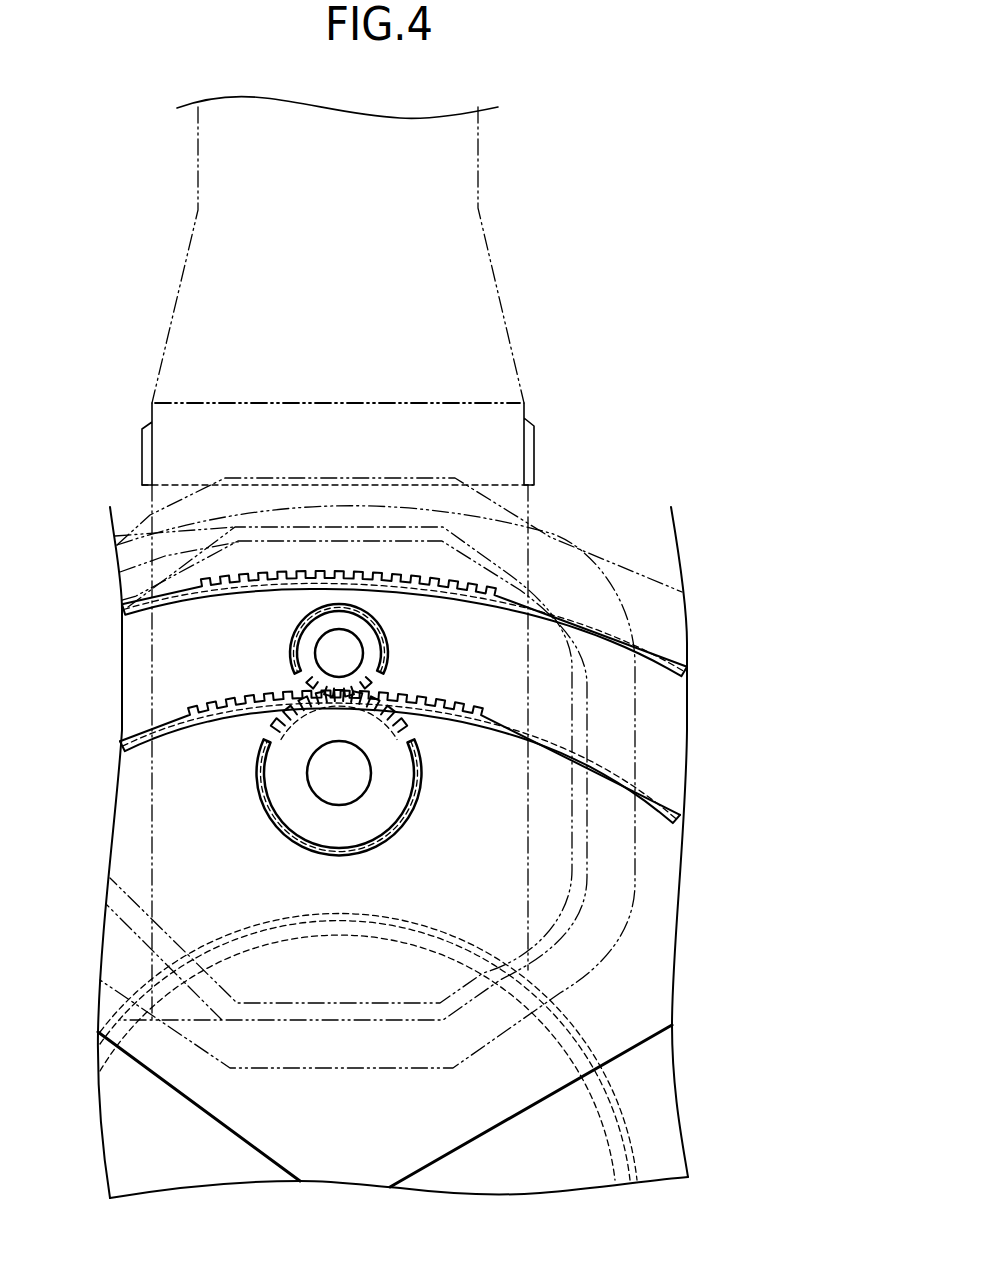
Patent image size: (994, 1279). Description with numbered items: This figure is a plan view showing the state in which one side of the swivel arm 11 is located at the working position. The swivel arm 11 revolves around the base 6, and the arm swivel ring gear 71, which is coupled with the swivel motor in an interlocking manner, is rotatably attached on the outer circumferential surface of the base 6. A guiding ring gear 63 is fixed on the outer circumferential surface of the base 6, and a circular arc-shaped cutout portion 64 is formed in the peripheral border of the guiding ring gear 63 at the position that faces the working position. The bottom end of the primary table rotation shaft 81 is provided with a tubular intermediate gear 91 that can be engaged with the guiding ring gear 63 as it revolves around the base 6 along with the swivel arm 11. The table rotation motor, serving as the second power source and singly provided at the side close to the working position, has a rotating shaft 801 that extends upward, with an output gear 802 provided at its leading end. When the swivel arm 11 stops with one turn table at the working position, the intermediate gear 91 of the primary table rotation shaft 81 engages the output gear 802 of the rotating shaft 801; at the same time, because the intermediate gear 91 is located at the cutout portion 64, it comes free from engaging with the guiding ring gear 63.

The swivel arm 11 is at (493, 273).
The base 6 is at (632, 1123).
The intermediate gear 91 is at (365, 650).
The arm swivel ring gear 71 is at (653, 644).
The cutout portion 64 is at (277, 733).
The guiding ring gear 63 is at (653, 790).
The primary table rotation shaft 81 is at (293, 653).
The rotating shaft 801 is at (330, 803).
The output gear 802 is at (390, 802).